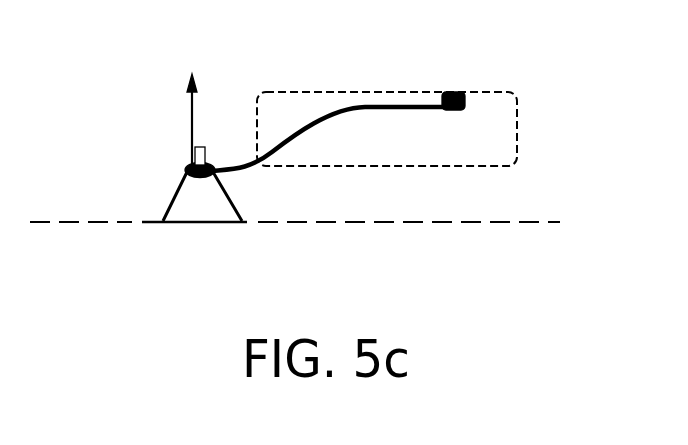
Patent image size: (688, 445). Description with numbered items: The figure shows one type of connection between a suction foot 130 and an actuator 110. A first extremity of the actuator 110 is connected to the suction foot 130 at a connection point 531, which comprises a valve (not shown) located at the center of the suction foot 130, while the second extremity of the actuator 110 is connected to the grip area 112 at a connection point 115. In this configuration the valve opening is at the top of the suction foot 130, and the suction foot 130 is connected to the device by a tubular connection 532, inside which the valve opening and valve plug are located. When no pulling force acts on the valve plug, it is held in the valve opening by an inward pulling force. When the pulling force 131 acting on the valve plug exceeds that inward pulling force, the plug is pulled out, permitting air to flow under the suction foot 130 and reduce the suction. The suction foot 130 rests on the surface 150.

The actuator 110 is at (363, 107).
The grip area 112 is at (517, 134).
The connection point 115 is at (455, 92).
The suction foot 130 is at (200, 222).
The pulling force 131 is at (192, 111).
The ground surface 150 is at (63, 222).
The connection point 531 is at (187, 170).
The tubular connection 532 is at (200, 146).